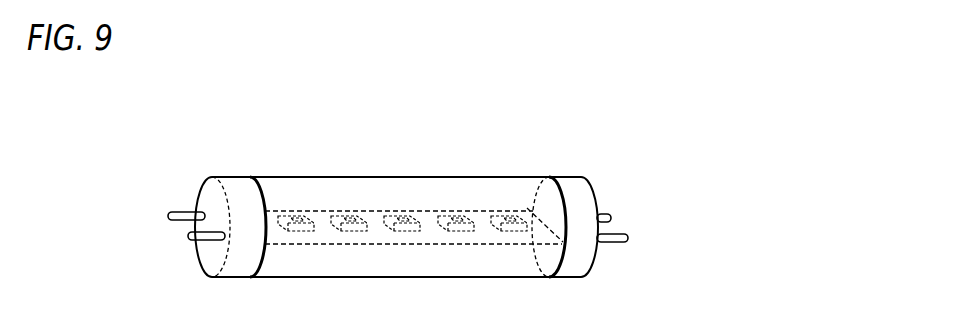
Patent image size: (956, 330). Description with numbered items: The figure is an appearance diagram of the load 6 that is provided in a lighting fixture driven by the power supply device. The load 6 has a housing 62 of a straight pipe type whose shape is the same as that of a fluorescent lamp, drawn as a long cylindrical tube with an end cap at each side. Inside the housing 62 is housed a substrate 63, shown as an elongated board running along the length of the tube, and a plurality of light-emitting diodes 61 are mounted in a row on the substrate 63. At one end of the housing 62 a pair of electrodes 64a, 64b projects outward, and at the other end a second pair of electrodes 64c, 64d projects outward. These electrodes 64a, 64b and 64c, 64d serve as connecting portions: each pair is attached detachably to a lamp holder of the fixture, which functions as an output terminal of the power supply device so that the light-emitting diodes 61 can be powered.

The load 6 is at (523, 158).
The light-emitting diodes 61 is at (291, 289).
The housing 62 is at (355, 177).
The substrate 63 is at (477, 210).
The electrode 64a is at (187, 212).
The electrode 64b is at (192, 243).
The electrode 64c is at (612, 217).
The electrode 64d is at (629, 239).